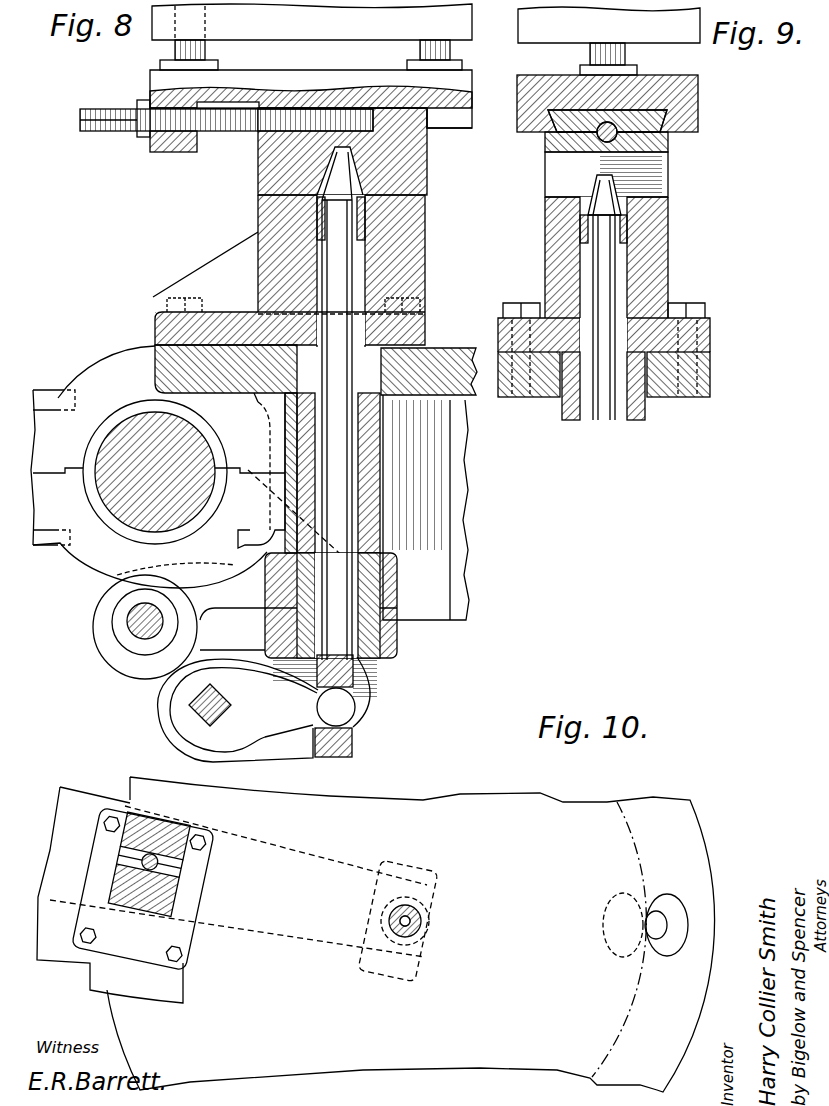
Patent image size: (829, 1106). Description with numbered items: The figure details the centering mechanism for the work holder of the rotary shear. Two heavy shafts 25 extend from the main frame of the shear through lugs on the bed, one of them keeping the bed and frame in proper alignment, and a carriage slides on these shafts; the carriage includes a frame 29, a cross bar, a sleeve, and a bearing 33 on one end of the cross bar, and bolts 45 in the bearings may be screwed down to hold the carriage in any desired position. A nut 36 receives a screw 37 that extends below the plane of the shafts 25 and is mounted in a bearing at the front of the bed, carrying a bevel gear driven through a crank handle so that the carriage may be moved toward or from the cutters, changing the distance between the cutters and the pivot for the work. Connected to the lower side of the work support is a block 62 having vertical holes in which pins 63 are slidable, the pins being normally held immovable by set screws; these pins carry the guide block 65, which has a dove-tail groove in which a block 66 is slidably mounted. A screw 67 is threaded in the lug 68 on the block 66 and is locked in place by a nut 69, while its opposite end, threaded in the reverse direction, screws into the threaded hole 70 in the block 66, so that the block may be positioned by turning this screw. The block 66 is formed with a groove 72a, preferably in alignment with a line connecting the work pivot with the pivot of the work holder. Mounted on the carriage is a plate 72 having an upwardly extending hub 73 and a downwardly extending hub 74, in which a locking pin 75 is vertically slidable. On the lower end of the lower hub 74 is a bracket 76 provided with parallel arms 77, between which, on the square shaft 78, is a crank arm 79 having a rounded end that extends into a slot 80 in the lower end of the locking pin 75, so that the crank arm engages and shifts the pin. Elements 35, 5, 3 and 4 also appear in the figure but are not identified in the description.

In FIG. 8, the block 62 is at (312, 22).
In FIG. 9, the block 62 is at (609, 25).
In FIG. 8, the pins 63 is at (203, 52).
In FIG. 9, the pins 63 is at (593, 57).
In FIG. 8, the guide block 65 is at (325, 82).
In FIG. 9, the guide block 65 is at (698, 96).
In FIG. 8, the block 66 is at (413, 165).
In FIG. 9, the block 66 is at (668, 149).
In FIG. 10, the block 66 is at (148, 898).
In FIG. 8, the screw 67 is at (226, 131).
In FIG. 9, the screw 67 is at (598, 141).
In FIG. 8, the lug 68 is at (177, 150).
In FIG. 8, the nut 69 is at (138, 137).
In FIG. 8, the threaded hole 70 is at (428, 128).
In FIG. 8, the groove 72a is at (338, 153).
In FIG. 9, the groove 72a is at (655, 179).
In FIG. 10, the groove 72a is at (128, 862).
In FIG. 8, the upwardly extending hub 73 is at (416, 266).
In FIG. 9, the upwardly extending hub 73 is at (655, 276).
In FIG. 8, the plate 72 is at (410, 334).
In FIG. 9, the plate 72 is at (709, 334).
In FIG. 10, the plate 72 is at (178, 937).
In FIG. 8, the frame 29 is at (175, 358).
In FIG. 9, the frame 29 is at (711, 386).
In FIG. 10, the frame 29 is at (110, 895).
In FIG. 8, the bolts 45 is at (50, 397).
In FIG. 8, the bearing 33 is at (158, 467).
In FIG. 8, the shafts 25 is at (115, 460).
In FIG. 8, the locking pin 75 is at (330, 438).
In FIG. 9, the locking pin 75 is at (603, 278).
In FIG. 10, the locking pin 75 is at (170, 866).
In FIG. 8, the downwardly extending hub 74 is at (368, 537).
In FIG. 9, the downwardly extending hub 74 is at (566, 410).
In FIG. 8, the screw 37 is at (128, 618).
In FIG. 8, the bushing 35 is at (128, 637).
In FIG. 8, the nut 36 is at (232, 616).
In FIG. 8, the bracket 76 is at (398, 646).
In FIG. 8, the square shaft 78 is at (225, 701).
In FIG. 8, the crank arm 79 is at (273, 703).
In FIG. 8, the slot 80 is at (352, 733).
In FIG. 8, the parallel arms 77 is at (280, 758).
In FIG. 10, the cylinder body 5 is at (411, 934).
In FIG. 10, the opening 3 is at (672, 908).
In FIG. 10, the aperture 4 is at (650, 903).